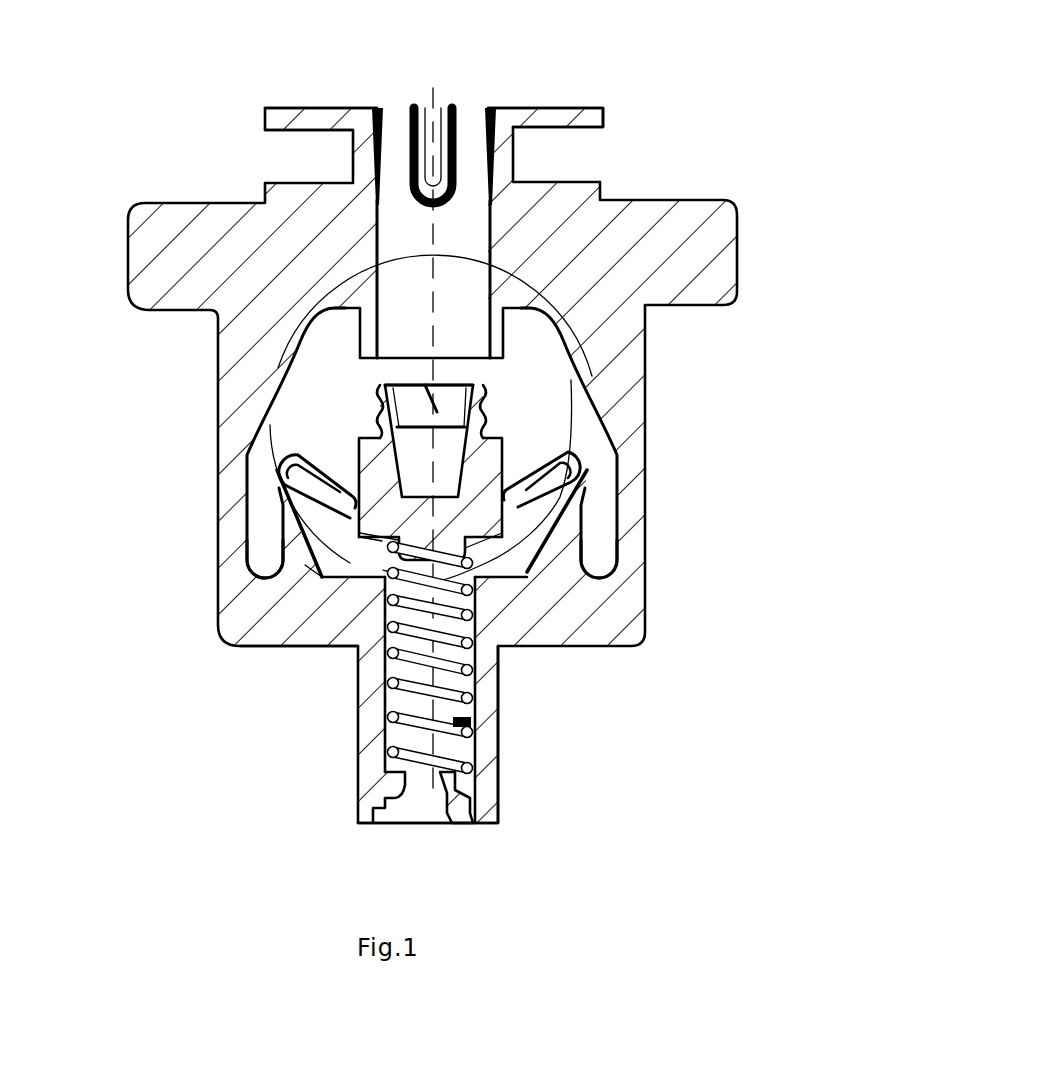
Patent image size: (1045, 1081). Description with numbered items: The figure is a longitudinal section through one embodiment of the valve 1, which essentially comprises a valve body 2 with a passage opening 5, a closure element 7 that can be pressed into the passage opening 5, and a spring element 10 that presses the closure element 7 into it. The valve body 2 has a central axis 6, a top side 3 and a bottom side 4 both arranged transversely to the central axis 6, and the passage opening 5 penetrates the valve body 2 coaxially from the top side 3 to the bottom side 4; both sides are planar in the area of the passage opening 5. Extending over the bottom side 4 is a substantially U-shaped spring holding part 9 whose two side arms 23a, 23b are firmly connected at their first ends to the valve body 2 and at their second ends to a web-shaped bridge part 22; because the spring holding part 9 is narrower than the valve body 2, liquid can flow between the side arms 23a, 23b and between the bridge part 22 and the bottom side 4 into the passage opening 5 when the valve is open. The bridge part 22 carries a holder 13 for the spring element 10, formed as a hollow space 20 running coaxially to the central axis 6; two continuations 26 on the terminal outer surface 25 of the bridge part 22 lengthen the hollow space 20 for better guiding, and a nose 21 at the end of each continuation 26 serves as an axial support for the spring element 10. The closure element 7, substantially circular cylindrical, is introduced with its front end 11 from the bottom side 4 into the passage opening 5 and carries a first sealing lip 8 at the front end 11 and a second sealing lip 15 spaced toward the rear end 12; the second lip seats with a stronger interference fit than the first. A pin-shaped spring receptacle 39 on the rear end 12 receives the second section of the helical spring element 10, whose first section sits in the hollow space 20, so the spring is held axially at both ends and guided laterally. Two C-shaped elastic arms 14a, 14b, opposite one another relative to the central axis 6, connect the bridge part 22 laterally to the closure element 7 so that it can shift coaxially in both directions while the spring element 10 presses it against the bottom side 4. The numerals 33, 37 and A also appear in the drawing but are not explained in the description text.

The valve 1 is at (719, 75).
The valve body 2 is at (236, 176).
The top side 3 is at (566, 108).
The bottom side 4 is at (502, 360).
The passage opening 5 is at (463, 234).
The central axis 6 is at (438, 92).
The closure element 7 is at (430, 397).
The first sealing lip 8 is at (397, 427).
The spring holding part 9 is at (202, 433).
The spring element 10 is at (473, 721).
The front end 11 is at (377, 390).
The rear end 12 is at (380, 540).
The holder 13 is at (370, 638).
The elastic arm 14a is at (284, 461).
The elastic arm 14b is at (583, 488).
The second sealing lip 15 is at (412, 450).
The hollow space 20 is at (397, 668).
The nose 21 is at (392, 790).
The bridge part 22 is at (603, 645).
The side arm 23a is at (225, 518).
The side arm 23b is at (628, 498).
The terminal outer surface 25 is at (267, 649).
The continuation 26 is at (482, 763).
The sealing ring 33 is at (400, 490).
The slot 37 is at (419, 122).
The spring receptacle 39 is at (466, 557).
The direction A is at (308, 573).